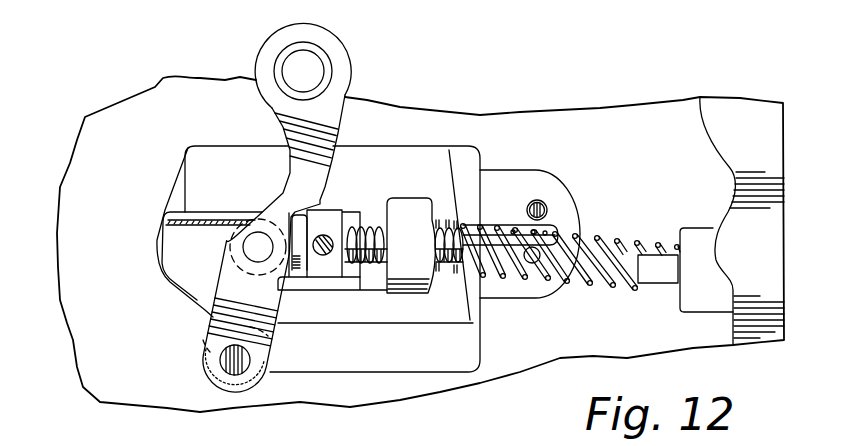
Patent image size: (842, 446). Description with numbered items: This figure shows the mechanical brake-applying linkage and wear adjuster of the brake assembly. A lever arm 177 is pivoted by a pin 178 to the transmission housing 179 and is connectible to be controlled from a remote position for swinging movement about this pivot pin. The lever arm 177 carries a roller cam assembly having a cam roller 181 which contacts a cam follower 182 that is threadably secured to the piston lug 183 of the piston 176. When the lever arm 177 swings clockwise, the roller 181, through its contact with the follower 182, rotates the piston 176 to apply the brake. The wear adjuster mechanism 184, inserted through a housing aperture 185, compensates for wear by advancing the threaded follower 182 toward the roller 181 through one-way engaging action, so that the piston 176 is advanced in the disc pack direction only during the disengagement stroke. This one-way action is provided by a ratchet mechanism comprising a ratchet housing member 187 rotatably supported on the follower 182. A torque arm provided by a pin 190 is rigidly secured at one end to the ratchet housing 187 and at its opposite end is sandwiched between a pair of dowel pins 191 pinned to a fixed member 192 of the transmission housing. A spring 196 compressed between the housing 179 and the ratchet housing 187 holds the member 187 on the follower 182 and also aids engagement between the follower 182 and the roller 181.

The piston 176 is at (372, 225).
The lever arm 177 is at (347, 72).
The pin 178 is at (247, 373).
The transmission housing 179 is at (165, 78).
The cam roller 181 is at (230, 240).
The cam follower 182 is at (306, 262).
The piston lug 183 is at (333, 217).
The wear adjuster mechanism 184 is at (400, 296).
The housing aperture 185 is at (710, 168).
The ratchet housing member 187 is at (408, 200).
The pin 190 is at (510, 225).
The dowel pins 191 is at (560, 205).
The fixed member 192 is at (567, 188).
The spring 196 is at (620, 238).